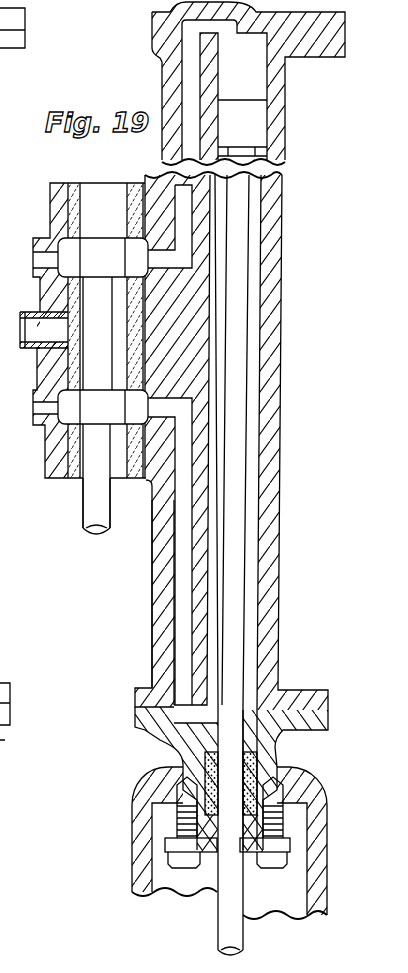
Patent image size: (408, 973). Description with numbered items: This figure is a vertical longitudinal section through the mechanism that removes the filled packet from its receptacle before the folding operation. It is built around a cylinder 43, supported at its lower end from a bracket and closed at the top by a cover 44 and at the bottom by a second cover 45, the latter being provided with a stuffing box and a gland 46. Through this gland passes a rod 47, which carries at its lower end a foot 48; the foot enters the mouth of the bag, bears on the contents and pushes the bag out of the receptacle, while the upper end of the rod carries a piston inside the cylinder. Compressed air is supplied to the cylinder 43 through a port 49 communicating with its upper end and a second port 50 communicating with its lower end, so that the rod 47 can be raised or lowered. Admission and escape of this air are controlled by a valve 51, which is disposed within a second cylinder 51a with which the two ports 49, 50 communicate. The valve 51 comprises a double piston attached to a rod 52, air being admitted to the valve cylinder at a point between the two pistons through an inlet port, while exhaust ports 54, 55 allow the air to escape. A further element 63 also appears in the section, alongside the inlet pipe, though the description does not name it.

The cylinder 43 is at (292, 337).
The cover 44 is at (152, 21).
The second cover 45 is at (145, 727).
The gland 46 is at (278, 790).
The rod 47 is at (240, 246).
The foot 48 is at (242, 128).
The port 49 is at (188, 63).
The second port 50 is at (178, 658).
The valve 51 is at (112, 303).
The second cylinder 51a is at (70, 480).
The rod 52 is at (118, 517).
The exhaust port 54 is at (45, 258).
The exhaust port 55 is at (45, 403).
The pipe 63 is at (44, 330).